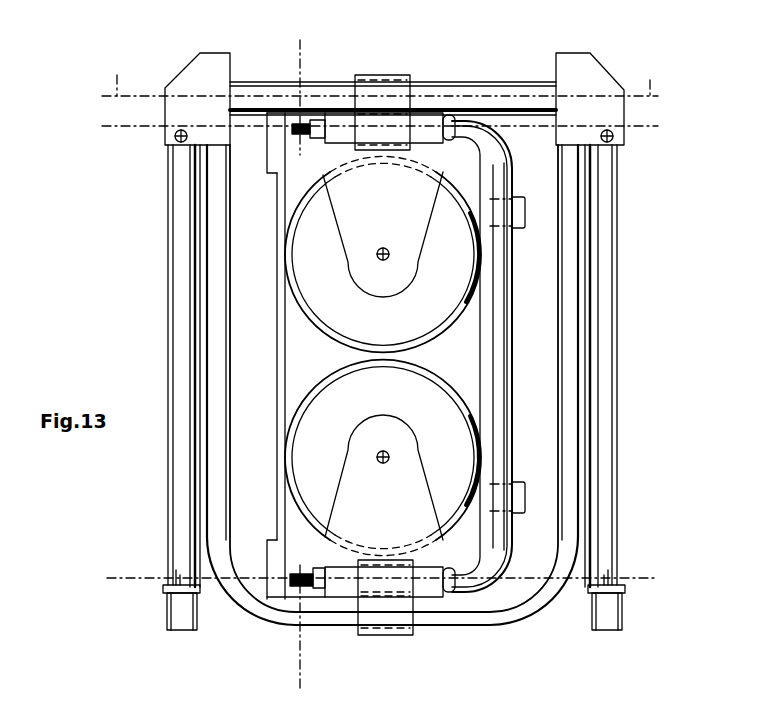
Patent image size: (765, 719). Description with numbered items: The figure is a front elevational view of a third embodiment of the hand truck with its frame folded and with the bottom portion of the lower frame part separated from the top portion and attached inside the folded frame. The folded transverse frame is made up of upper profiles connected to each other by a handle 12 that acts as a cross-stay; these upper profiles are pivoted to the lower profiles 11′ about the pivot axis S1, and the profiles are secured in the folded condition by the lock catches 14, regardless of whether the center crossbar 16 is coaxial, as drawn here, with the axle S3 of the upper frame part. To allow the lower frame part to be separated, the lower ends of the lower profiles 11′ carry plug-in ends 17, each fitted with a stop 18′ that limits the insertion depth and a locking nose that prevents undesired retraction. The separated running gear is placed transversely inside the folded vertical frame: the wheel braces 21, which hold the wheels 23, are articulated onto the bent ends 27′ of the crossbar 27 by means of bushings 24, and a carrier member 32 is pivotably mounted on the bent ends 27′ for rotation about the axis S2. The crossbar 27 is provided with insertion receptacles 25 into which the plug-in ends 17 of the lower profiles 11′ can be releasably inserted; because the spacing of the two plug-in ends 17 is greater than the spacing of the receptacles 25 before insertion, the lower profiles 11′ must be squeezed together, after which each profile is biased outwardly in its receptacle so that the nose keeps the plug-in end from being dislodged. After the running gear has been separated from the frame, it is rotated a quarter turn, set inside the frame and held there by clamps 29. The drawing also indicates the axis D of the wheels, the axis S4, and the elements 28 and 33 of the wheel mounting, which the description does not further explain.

The handle 12 is at (250, 600).
The lock catch 14 is at (192, 72).
The center crossbar 16 is at (262, 86).
The plug-in end 17 is at (172, 608).
The stop 18′ is at (178, 582).
The lower profile 11′ is at (606, 250).
The wheel brace 21 is at (300, 195).
The wheel 23 is at (325, 305).
The bushing 24 is at (338, 115).
The insertion receptacle 25 is at (520, 212).
The crossbar 27 is at (497, 325).
The bent end 27′ is at (450, 112).
The latch 28 is at (315, 112).
The clamp 29 is at (390, 75).
The carrier member 32 is at (492, 365).
The support bar 33 is at (285, 258).
The pivot axis S1 is at (104, 126).
The axis S2 is at (300, 42).
The axle S3 is at (117, 75).
The section line S4 is at (177, 140).
The wheel axis D is at (385, 248).